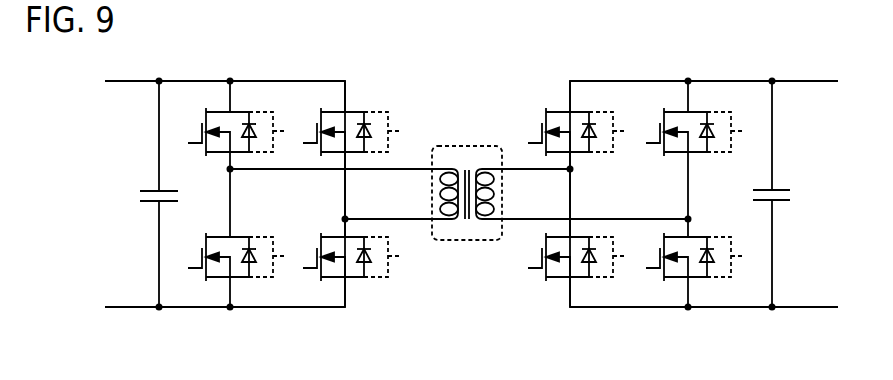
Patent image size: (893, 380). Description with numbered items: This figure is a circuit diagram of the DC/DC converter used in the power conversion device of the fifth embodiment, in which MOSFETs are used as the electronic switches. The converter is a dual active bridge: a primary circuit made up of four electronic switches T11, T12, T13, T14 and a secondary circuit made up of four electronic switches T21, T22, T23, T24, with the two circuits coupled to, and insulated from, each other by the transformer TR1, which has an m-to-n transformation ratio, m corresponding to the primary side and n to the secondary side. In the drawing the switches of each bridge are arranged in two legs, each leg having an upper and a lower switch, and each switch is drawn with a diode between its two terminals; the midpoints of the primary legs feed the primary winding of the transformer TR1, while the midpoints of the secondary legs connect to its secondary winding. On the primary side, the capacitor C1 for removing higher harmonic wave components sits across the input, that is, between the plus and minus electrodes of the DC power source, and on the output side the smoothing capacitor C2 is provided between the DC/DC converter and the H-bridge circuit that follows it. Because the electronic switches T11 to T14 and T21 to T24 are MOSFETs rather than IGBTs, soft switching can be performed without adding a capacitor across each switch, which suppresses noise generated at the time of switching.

The electronic switch T11 is at (236, 117).
The electronic switch T12 is at (236, 241).
The electronic switch T13 is at (350, 117).
The electronic switch T14 is at (351, 241).
The electronic switch T21 is at (574, 117).
The electronic switch T22 is at (574, 272).
The electronic switch T23 is at (694, 148).
The electronic switch T24 is at (694, 272).
The capacitor C1 is at (145, 194).
The capacitor C2 is at (785, 194).
The transformer TR1 is at (472, 146).